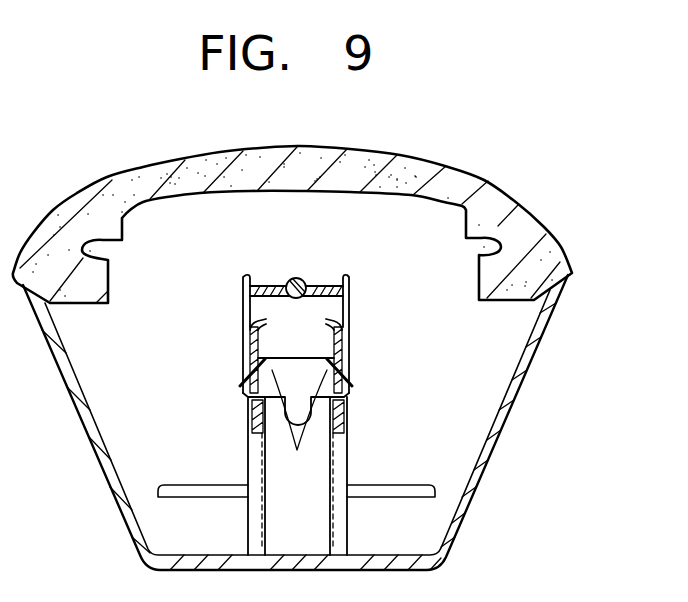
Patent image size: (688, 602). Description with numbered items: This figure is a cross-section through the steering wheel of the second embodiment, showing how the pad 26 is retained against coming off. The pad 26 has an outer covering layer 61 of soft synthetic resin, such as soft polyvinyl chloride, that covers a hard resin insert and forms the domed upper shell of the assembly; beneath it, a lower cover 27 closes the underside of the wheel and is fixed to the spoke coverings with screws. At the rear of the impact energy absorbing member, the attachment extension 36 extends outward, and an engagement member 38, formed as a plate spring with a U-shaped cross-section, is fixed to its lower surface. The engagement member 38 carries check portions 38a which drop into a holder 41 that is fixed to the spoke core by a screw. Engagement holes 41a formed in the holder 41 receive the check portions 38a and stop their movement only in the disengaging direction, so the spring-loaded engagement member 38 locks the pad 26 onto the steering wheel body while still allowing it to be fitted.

The covering layer 61 is at (316, 152).
The pad 26 is at (292, 199).
The lower cover 27 is at (480, 478).
The attachment extension 36 is at (262, 287).
The engagement member 38 is at (350, 292).
The check portions 38a is at (297, 450).
The holder 41 is at (330, 385).
The engagement holes 41a is at (341, 357).